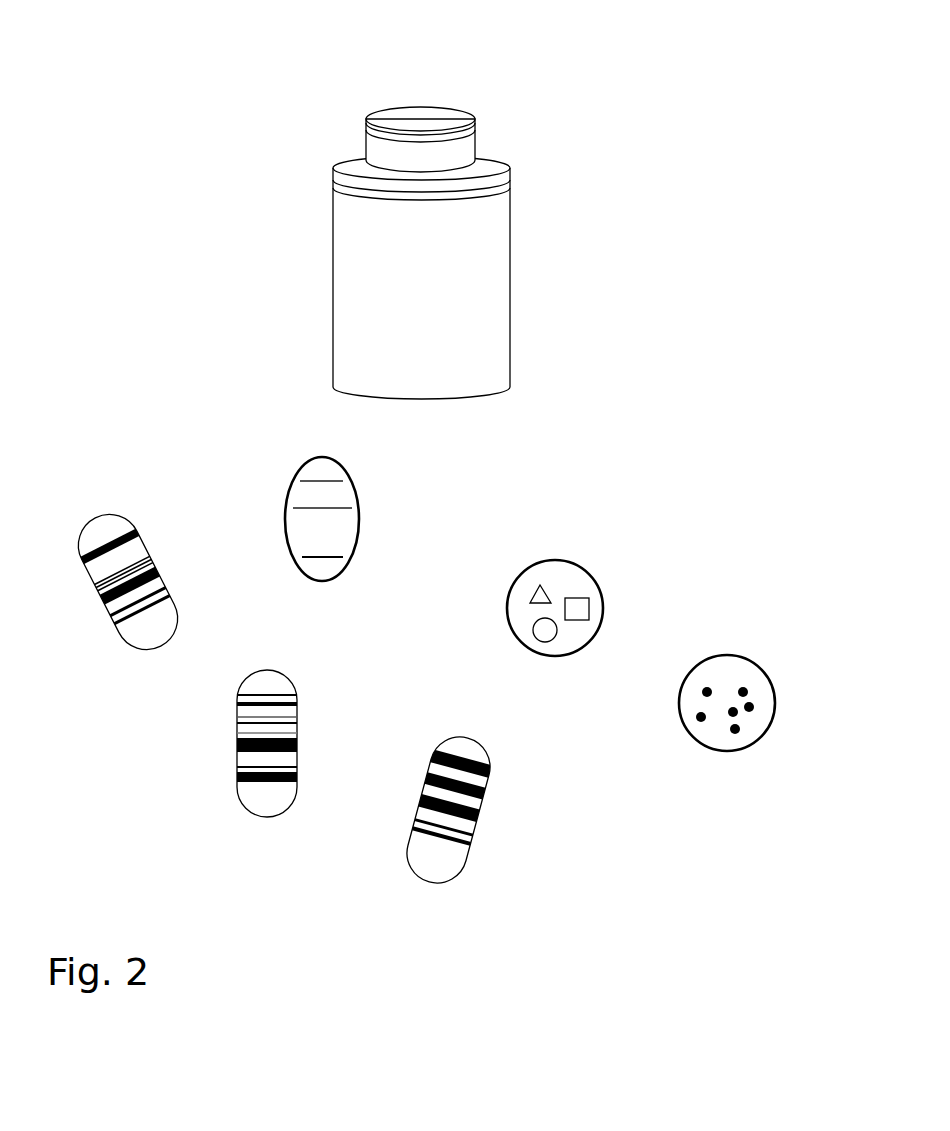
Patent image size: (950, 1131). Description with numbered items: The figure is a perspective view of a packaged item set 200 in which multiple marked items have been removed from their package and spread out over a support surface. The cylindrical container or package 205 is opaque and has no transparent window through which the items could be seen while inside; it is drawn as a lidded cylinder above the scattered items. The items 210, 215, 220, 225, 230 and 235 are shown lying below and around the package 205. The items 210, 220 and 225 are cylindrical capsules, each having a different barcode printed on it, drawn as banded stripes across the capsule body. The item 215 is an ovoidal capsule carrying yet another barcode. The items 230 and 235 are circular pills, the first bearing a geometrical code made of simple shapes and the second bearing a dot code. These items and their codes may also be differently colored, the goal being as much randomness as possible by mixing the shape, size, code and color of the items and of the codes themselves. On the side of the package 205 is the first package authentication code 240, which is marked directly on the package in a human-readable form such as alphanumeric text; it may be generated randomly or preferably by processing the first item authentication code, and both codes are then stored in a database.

The packaged item set 200 is at (45, 25).
The cylindrical container or package 205 is at (509, 247).
The cylindrical capsule 210 is at (98, 515).
The ovoidal capsule 215 is at (288, 491).
The cylindrical capsule 220 is at (292, 679).
The cylindrical capsule 225 is at (480, 806).
The circular pill 230 is at (590, 574).
The circular pill 235 is at (754, 656).
The first package authentication code 240 is at (464, 349).